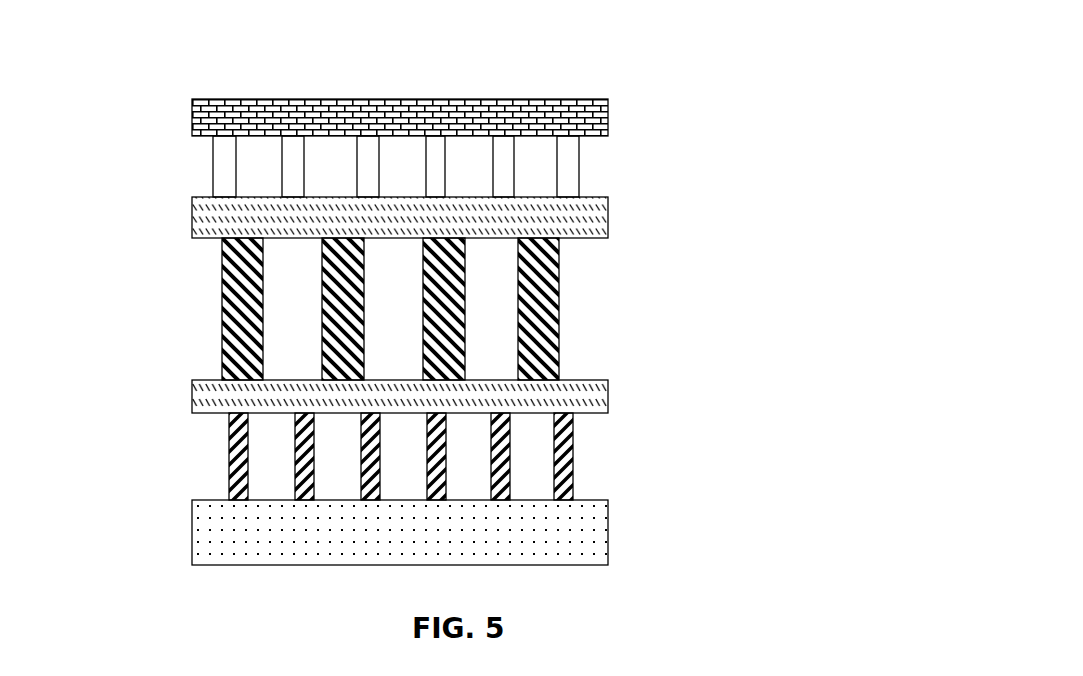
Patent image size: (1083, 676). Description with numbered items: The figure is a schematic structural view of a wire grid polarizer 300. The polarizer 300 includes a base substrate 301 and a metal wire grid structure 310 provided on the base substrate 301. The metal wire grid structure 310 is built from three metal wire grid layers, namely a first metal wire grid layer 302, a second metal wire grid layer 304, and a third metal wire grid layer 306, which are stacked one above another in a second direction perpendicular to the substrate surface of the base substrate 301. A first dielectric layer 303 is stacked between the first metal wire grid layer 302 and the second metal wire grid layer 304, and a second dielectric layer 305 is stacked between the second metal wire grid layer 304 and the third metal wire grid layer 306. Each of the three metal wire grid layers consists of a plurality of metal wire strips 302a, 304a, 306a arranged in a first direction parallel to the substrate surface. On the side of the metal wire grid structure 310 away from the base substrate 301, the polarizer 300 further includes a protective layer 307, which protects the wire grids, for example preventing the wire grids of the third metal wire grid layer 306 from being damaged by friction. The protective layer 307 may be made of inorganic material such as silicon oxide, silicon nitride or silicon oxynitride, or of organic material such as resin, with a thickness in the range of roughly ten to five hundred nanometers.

The polarizer 300 is at (465, 75).
The base substrate 301 is at (638, 538).
The first metal wire grid layer 302 is at (425, 456).
The metal wire strips 302a is at (229, 457).
The first dielectric layer 303 is at (638, 395).
The second metal wire grid layer 304 is at (424, 309).
The metal wire strips 304a is at (222, 312).
The second dielectric layer 305 is at (638, 207).
The third metal wire grid layer 306 is at (424, 166).
The metal wire strips 306a is at (213, 172).
The protective layer 307 is at (638, 117).
The metal wire grid structure 310 is at (838, 155).